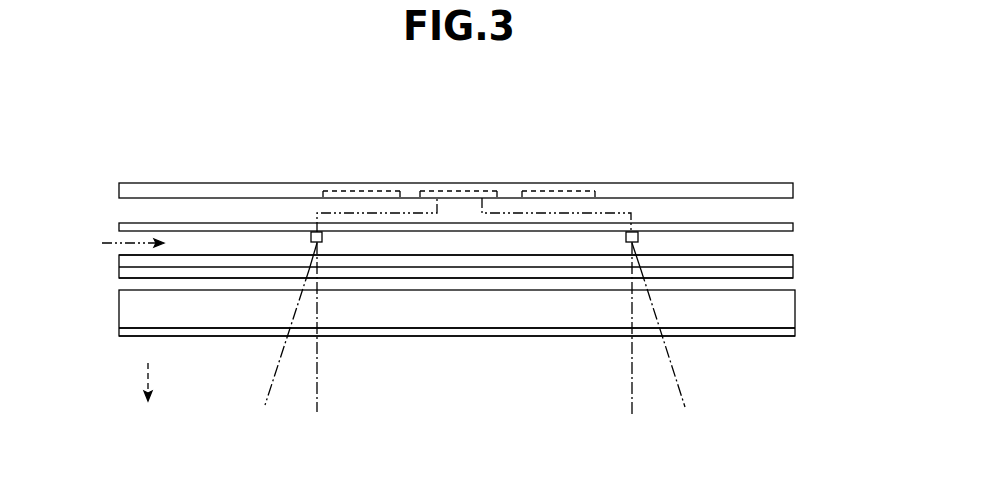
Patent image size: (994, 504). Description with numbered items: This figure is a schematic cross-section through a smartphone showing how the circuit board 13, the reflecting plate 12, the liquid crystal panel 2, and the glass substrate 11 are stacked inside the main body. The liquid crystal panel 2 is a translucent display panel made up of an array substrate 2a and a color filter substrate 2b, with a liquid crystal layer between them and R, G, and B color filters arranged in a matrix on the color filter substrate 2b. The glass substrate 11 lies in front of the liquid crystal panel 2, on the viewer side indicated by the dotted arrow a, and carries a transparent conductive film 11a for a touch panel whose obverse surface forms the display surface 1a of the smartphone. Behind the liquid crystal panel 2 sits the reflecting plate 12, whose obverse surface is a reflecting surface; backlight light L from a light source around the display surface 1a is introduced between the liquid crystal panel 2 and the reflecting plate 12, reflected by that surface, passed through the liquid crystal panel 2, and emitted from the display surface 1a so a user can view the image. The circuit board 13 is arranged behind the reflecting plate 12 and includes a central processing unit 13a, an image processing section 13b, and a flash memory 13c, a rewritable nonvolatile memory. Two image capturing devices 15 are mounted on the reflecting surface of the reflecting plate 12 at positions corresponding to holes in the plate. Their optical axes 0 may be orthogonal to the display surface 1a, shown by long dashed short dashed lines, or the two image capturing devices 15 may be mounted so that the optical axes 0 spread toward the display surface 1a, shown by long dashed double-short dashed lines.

The circuit board 13 is at (793, 190).
The central processing unit 13a is at (557, 190).
The image processing section 13b is at (456, 190).
The flash memory 13c is at (363, 190).
The reflecting plate 12 is at (793, 227).
The liquid crystal panel 2 is at (795, 263).
The array substrate 2a is at (119, 258).
The color filter substrate 2b is at (119, 272).
The glass substrate 11 is at (795, 305).
The transparent conductive film 11a is at (119, 331).
The display surface 1a is at (492, 336).
The image capturing devices 15 is at (311, 239).
The backlight light L is at (127, 232).
The dotted arrow a is at (150, 378).
The optical axes 0 is at (268, 392).